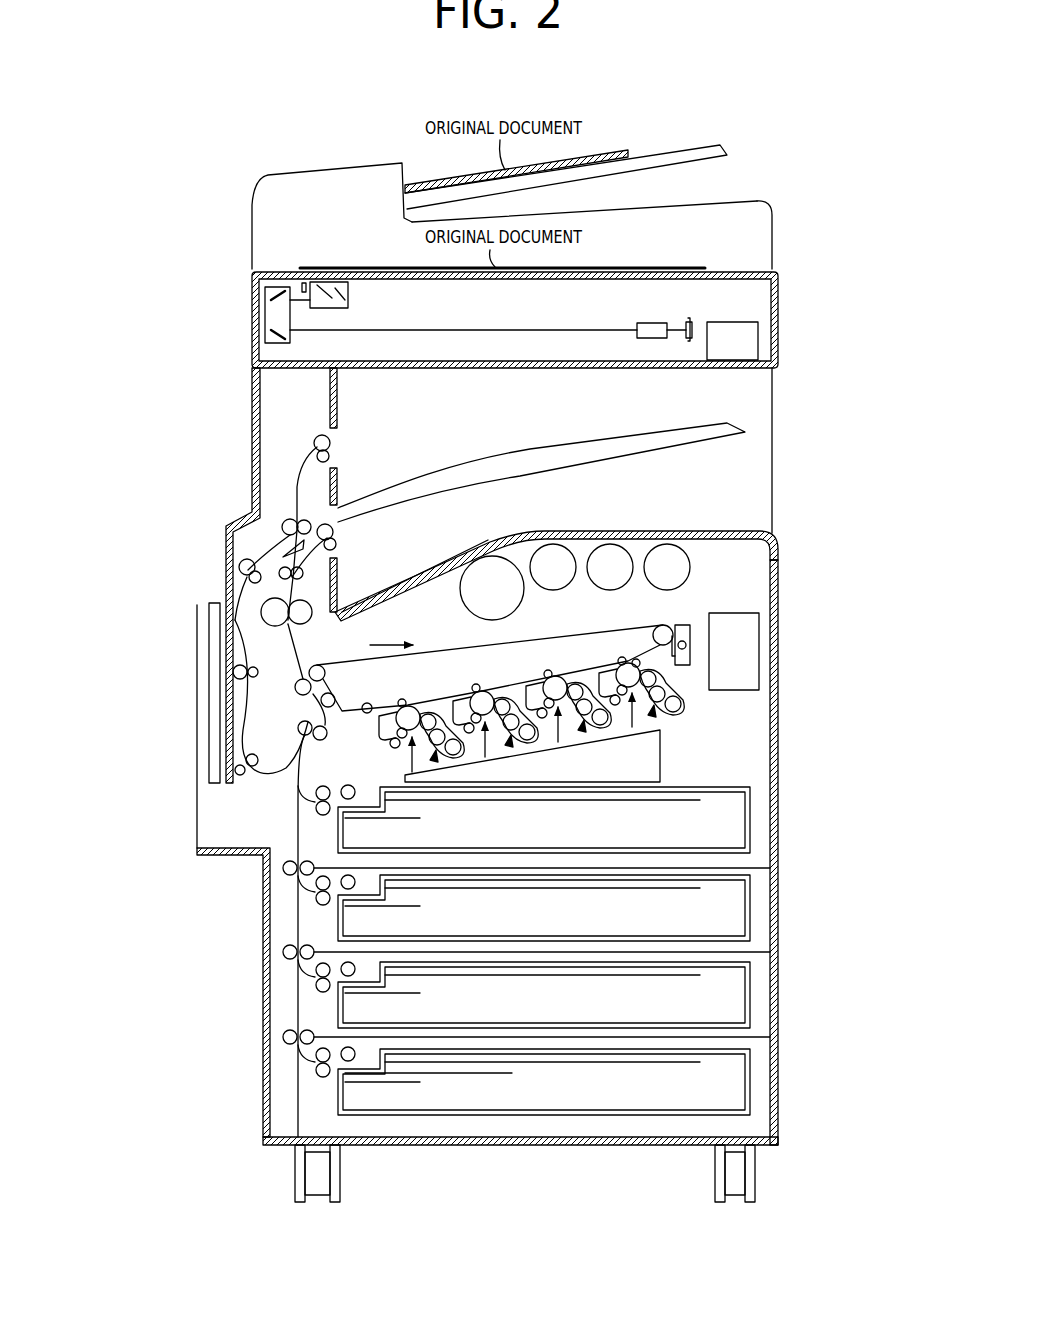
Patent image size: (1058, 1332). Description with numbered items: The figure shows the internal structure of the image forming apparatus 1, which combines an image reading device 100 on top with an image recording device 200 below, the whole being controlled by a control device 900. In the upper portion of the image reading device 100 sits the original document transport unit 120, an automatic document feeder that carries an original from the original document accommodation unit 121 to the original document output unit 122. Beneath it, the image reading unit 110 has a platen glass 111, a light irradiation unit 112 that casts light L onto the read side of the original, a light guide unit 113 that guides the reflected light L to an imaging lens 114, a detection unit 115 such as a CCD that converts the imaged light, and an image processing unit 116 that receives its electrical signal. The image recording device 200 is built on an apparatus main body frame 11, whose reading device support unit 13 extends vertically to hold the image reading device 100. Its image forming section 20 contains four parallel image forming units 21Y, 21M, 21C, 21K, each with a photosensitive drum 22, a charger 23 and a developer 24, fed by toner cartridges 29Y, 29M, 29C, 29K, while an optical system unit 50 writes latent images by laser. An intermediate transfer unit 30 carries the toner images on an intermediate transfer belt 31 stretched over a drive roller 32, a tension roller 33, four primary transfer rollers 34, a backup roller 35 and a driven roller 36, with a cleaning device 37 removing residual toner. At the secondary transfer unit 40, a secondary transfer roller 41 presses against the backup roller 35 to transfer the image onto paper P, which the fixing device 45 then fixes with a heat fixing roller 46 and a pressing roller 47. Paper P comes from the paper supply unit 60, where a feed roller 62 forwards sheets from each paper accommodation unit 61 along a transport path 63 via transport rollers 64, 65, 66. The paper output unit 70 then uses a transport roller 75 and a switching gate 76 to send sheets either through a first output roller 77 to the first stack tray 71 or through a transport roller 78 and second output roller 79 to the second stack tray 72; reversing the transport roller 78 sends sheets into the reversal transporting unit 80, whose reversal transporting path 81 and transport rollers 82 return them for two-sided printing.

The image forming apparatus 1 is at (198, 140).
The image reading device 100 is at (147, 217).
The image reading unit 110 is at (240, 345).
The platen glass 111 is at (558, 278).
The light irradiation unit 112 is at (358, 303).
The light guide unit 113 is at (302, 345).
The imaging lens 114 is at (645, 322).
The detection unit 115 is at (688, 320).
The image processing unit 116 is at (758, 335).
The light L is at (490, 328).
The original document transport unit 120 is at (240, 238).
The original document accommodation unit 121 is at (666, 150).
The original document output unit 122 is at (565, 207).
The image recording device 200 is at (240, 422).
The apparatus main body frame 11 is at (778, 575).
The reading device support unit 13 is at (253, 395).
The image forming section 20 is at (710, 570).
The image forming unit 21K is at (436, 775).
The image forming unit 21C is at (510, 760).
The image forming unit 21M is at (583, 745).
The image forming unit 21Y is at (650, 722).
The photosensitive drum 22 is at (399, 740).
The charger 23 is at (642, 728).
The developer 24 is at (700, 712).
The toner cartridge 29K is at (492, 562).
The toner cartridge 29C is at (554, 546).
The toner cartridge 29M is at (611, 546).
The toner cartridge 29Y is at (667, 546).
The intermediate transfer unit 30 is at (438, 641).
The intermediate transfer belt 31 is at (357, 666).
The drive roller 32 is at (668, 625).
The tension roller 33 is at (323, 702).
The primary transfer roller 34 is at (403, 699).
The backup roller 35 is at (319, 666).
The driven roller 36 is at (367, 702).
The cleaning device 37 is at (690, 656).
The secondary transfer unit 40 is at (294, 680).
The secondary transfer roller 41 is at (298, 688).
The fixing device 45 is at (258, 612).
The heat fixing roller 46 is at (303, 604).
The pressing roller 47 is at (260, 603).
The optical system unit 50 is at (664, 765).
The paper supply unit 60 is at (296, 1078).
The paper accommodation unit 61 is at (752, 821).
The feed roller 62 is at (351, 799).
The transport path 63 is at (294, 830).
The transport roller 64 is at (323, 816).
The transport roller 65 is at (284, 874).
The transport roller 66 is at (324, 741).
The paper output unit 70 is at (278, 496).
The first stack tray 71 is at (423, 560).
The second stack tray 72 is at (546, 448).
The transport roller 75 is at (305, 575).
The switching gate 76 is at (283, 550).
The first output roller 77 is at (333, 527).
The transport roller 78 is at (282, 529).
The second output roller 79 is at (327, 440).
The reversal transporting unit 80 is at (240, 700).
The reversal transporting path 81 is at (240, 727).
The transport roller 82 is at (239, 567).
The control device 900 is at (760, 625).
The paper P is at (740, 787).